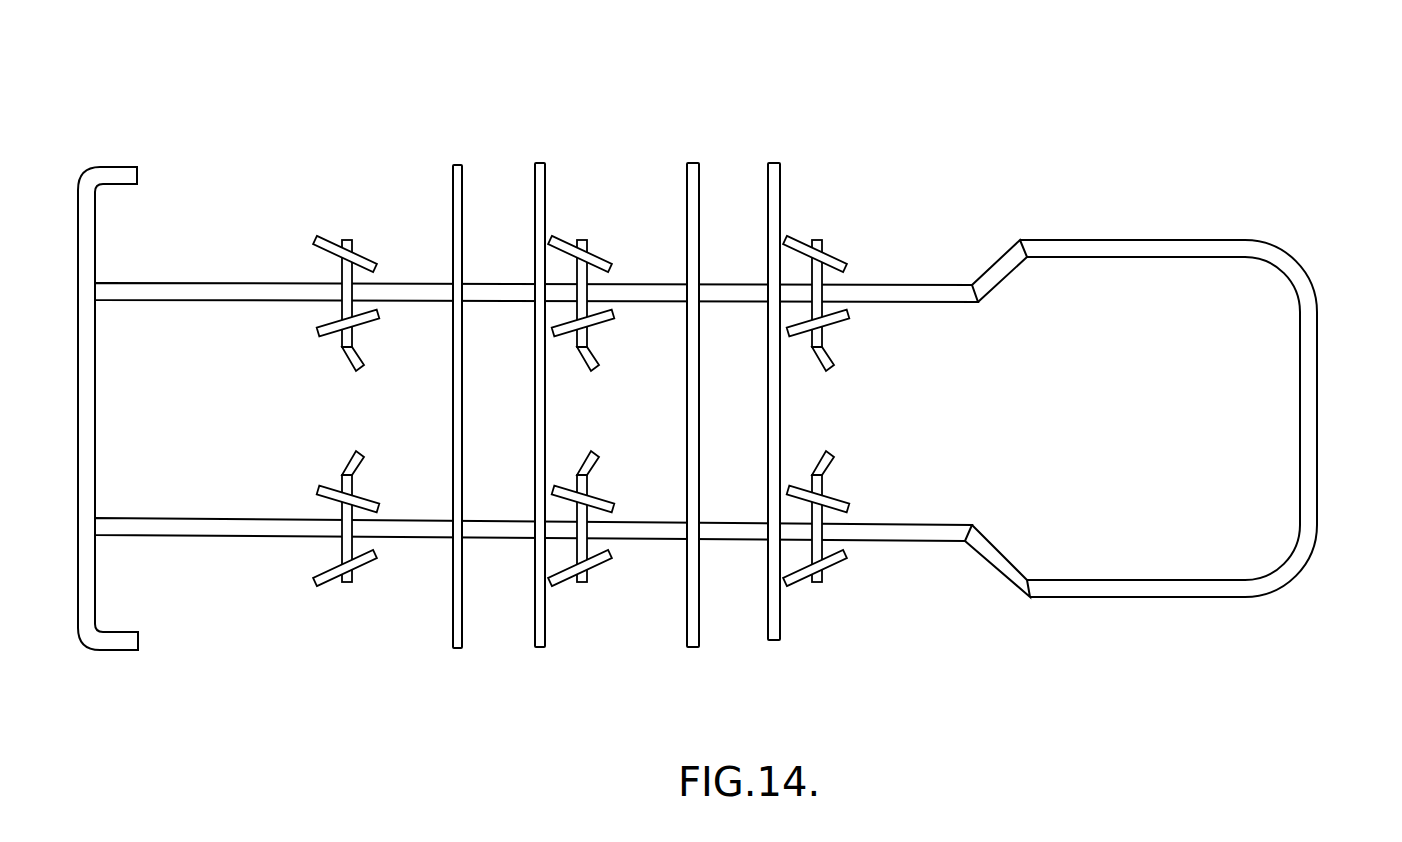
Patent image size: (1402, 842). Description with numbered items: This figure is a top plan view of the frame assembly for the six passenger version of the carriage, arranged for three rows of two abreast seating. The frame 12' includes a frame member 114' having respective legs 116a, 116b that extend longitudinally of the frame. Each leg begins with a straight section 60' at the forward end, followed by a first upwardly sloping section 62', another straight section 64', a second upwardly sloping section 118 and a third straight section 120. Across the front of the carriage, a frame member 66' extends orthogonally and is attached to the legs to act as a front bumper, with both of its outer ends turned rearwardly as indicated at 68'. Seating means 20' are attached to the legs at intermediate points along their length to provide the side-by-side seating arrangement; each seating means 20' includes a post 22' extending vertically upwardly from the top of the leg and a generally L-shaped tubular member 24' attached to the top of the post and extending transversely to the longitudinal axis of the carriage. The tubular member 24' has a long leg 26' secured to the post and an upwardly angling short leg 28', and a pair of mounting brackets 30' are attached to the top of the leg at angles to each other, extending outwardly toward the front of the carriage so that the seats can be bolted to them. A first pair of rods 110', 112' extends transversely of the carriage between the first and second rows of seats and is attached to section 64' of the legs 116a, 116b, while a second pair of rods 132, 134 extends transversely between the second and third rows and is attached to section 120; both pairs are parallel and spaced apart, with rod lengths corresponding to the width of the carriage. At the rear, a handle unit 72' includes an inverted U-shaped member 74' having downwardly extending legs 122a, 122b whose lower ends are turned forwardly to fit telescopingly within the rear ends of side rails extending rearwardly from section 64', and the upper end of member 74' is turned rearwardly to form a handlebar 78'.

The frame 12' is at (340, 52).
The seating means 20' is at (589, 422).
The post 22' is at (589, 411).
The tubular member 24' is at (586, 414).
The long leg 26' is at (590, 396).
The short leg 28' is at (624, 402).
The mounting brackets 30' is at (583, 439).
The straight section 60' is at (165, 409).
The first upwardly sloping section 62' is at (281, 421).
The straight section 64' is at (508, 404).
The frame member 66' is at (126, 408).
The turned outer ends 68' is at (123, 410).
The handle unit 72' is at (1168, 369).
The inverted U-shaped member 74' is at (1349, 252).
The handlebar 78' is at (1255, 455).
The rod 110' is at (465, 379).
The rod 112' is at (550, 379).
The frame member 114' is at (997, 362).
The leg 116a is at (232, 283).
The leg 116b is at (258, 537).
The second upwardly sloping section 118 is at (740, 285).
The third straight section 120 is at (915, 302).
The leg 122a is at (1148, 240).
The leg 122b is at (1128, 598).
The rod 132 is at (710, 130).
The rod 134 is at (800, 130).